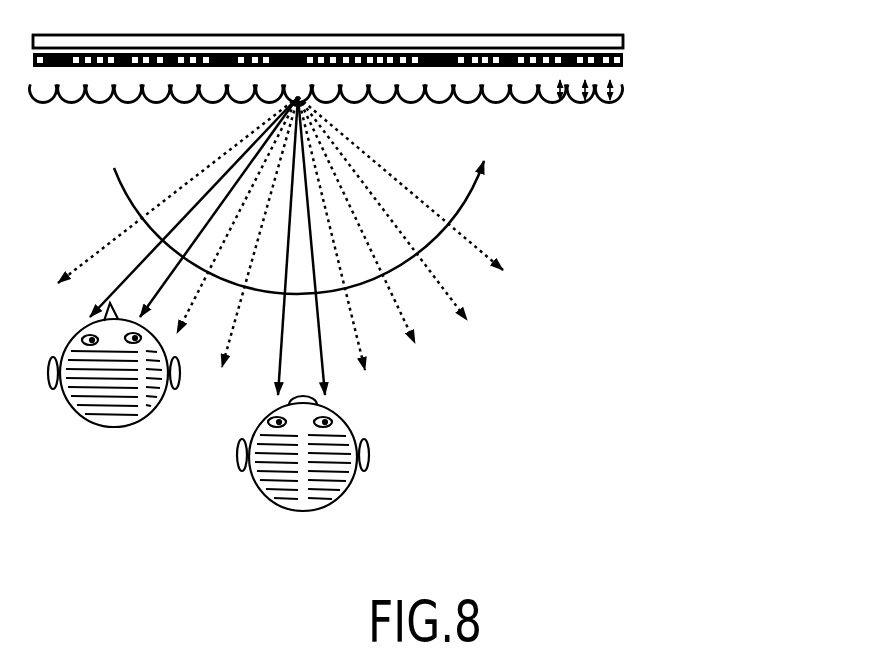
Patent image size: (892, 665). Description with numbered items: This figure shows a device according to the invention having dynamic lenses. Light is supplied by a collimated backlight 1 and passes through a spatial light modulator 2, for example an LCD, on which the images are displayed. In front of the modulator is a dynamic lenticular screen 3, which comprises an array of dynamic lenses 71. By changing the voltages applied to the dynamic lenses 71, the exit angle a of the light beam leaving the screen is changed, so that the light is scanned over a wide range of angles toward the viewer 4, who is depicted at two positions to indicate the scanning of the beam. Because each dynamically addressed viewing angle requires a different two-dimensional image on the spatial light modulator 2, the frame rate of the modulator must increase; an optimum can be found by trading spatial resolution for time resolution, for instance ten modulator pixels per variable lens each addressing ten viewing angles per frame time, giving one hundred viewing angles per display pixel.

The collimated backlight 1 is at (624, 38).
The spatial light modulator 2 is at (624, 57).
The dynamic lenticular screen 3 is at (620, 98).
The dynamic lenses 71 is at (172, 109).
The viewer 4 is at (224, 407).
The exit angle a is at (316, 220).